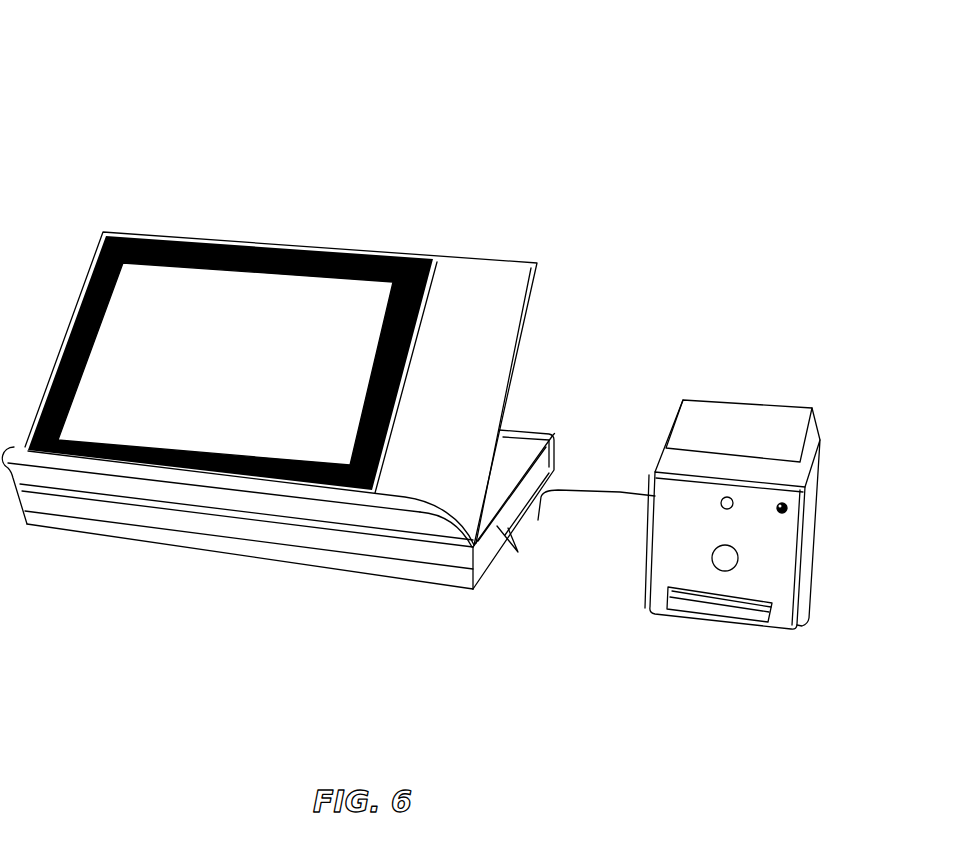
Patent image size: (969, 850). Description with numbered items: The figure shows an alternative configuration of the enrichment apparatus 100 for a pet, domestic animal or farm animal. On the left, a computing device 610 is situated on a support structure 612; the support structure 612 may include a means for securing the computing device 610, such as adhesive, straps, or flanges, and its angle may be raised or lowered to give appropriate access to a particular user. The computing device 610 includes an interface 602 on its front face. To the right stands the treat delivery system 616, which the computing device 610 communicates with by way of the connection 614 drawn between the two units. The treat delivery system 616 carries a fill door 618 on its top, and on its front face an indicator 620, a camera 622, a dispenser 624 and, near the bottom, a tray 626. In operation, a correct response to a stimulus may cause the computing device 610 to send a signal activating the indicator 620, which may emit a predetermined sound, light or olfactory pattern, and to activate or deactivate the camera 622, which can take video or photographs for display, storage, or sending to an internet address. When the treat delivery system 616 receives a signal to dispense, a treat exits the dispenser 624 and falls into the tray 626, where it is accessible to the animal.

The enrichment apparatus 100 is at (75, 65).
The interface 602 is at (208, 340).
The computing device 610 is at (292, 246).
The support structure 612 is at (488, 278).
The connection 614 is at (618, 498).
The treat delivery system 616 is at (657, 493).
The fill door 618 is at (792, 423).
The indicator 620 is at (712, 557).
The camera 622 is at (782, 512).
The dispenser 624 is at (727, 495).
The tray 626 is at (740, 614).